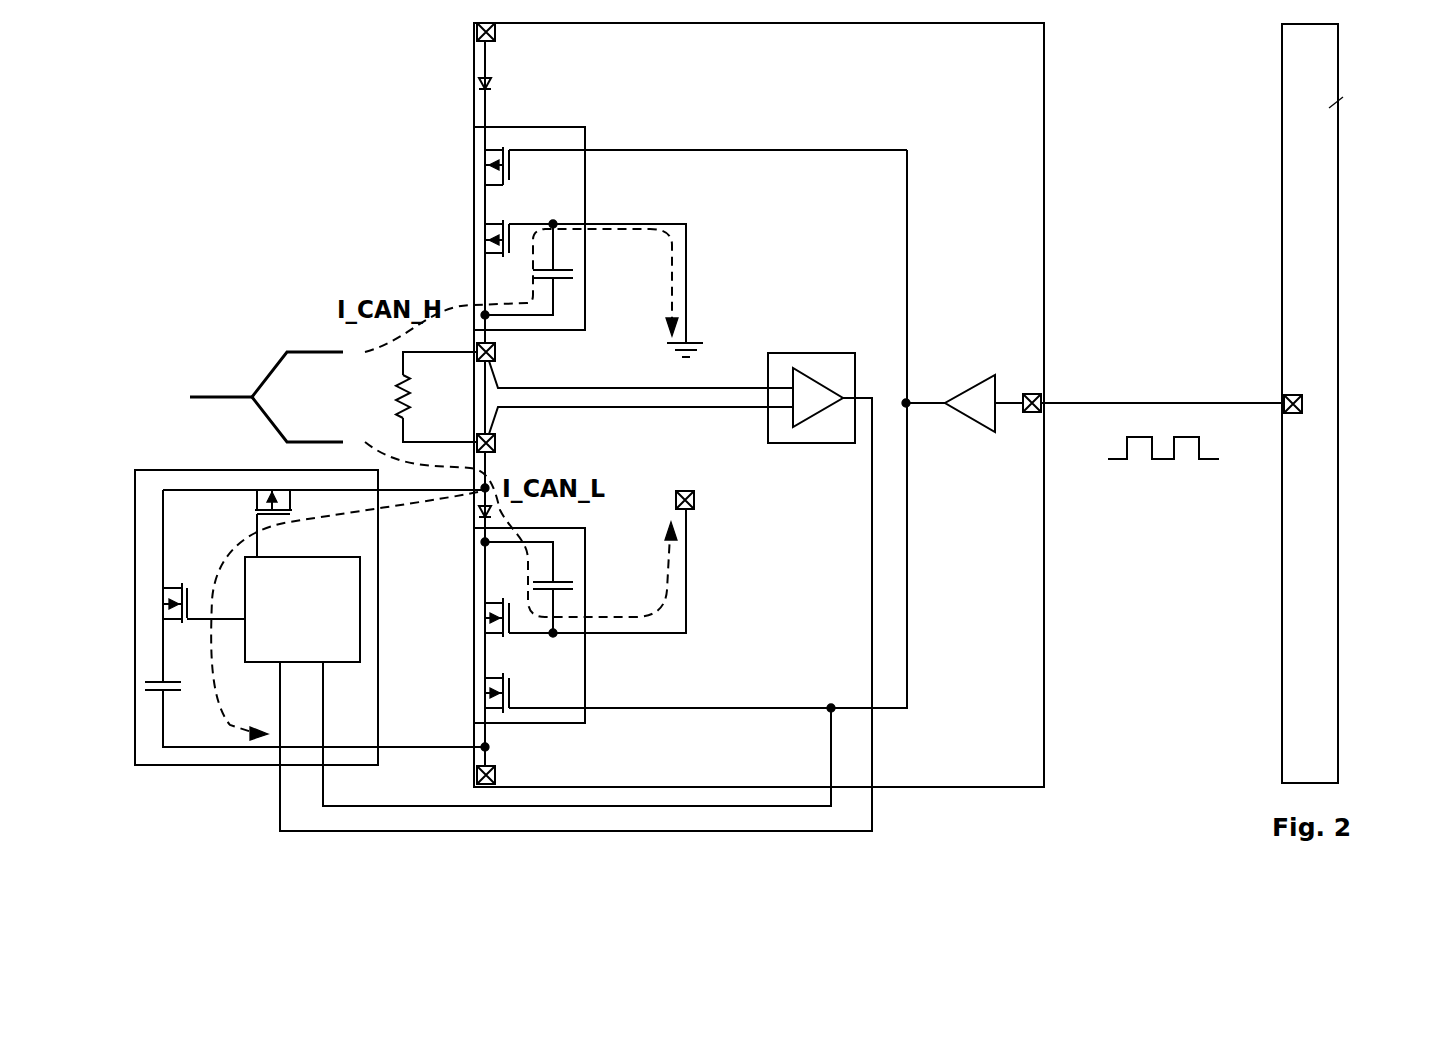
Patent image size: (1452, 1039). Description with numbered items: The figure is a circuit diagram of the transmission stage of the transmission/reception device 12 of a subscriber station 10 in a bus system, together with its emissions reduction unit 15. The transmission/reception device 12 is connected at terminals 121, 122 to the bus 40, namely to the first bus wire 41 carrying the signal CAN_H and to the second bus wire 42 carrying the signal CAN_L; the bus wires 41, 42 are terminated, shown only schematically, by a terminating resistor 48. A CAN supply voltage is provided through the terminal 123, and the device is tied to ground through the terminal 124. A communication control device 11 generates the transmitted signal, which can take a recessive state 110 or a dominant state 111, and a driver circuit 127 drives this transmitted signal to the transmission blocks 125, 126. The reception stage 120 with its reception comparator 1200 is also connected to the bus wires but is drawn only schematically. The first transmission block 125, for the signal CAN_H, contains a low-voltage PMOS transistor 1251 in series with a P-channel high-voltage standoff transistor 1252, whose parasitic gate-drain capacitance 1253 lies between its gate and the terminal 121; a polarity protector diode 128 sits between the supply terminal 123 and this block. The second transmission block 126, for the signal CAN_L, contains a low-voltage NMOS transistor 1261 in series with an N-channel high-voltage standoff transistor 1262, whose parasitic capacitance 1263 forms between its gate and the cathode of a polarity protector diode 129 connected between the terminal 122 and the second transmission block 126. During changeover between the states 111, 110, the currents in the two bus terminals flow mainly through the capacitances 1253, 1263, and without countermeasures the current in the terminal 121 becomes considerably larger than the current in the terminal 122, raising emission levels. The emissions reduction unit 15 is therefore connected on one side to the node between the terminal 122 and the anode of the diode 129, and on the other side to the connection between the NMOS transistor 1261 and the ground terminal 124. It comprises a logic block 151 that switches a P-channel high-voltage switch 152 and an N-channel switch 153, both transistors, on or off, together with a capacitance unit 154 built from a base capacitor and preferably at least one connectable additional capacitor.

The subscriber station 10 is at (248, 67).
The communication control device 11 is at (1282, 103).
The transmission/reception device 12 is at (1044, 66).
The emissions reduction unit 15 is at (190, 766).
The bus 40 is at (205, 398).
The first bus wire 41 is at (318, 351).
The second bus wire 42 is at (263, 420).
The terminating resistor 48 is at (395, 390).
The recessive state 110 is at (1115, 460).
The dominant state 111 is at (1126, 437).
The reception stage 120 is at (845, 352).
The terminal 121 is at (495, 349).
The terminal 122 is at (495, 440).
The terminal 123 is at (495, 30).
The terminal 124 is at (495, 772).
The first transmission block 125 is at (562, 127).
The second transmission block 126 is at (585, 675).
The driver circuit 127 is at (968, 421).
The polarity protector diode 128 is at (479, 83).
The polarity protector diode 129 is at (478, 512).
The logic block 151 is at (322, 617).
The P-channel high-voltage switch 152 is at (255, 500).
The N-channel switch 153 is at (170, 588).
The capacitance unit 154 is at (145, 690).
The reception comparator 1200 is at (805, 372).
The low-voltage PMOS transistor 1251 is at (492, 185).
The P-channel high-voltage standoff transistor 1252 is at (492, 224).
The parasitic capacitance 1253 is at (572, 278).
The low-voltage NMOS transistor 1261 is at (492, 678).
The N-channel high-voltage standoff transistor 1262 is at (492, 633).
The parasitic capacitance 1263 is at (572, 585).